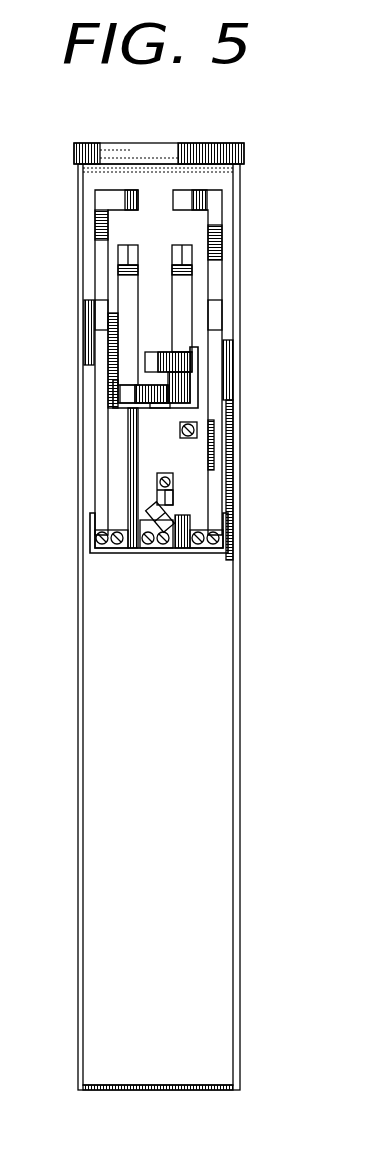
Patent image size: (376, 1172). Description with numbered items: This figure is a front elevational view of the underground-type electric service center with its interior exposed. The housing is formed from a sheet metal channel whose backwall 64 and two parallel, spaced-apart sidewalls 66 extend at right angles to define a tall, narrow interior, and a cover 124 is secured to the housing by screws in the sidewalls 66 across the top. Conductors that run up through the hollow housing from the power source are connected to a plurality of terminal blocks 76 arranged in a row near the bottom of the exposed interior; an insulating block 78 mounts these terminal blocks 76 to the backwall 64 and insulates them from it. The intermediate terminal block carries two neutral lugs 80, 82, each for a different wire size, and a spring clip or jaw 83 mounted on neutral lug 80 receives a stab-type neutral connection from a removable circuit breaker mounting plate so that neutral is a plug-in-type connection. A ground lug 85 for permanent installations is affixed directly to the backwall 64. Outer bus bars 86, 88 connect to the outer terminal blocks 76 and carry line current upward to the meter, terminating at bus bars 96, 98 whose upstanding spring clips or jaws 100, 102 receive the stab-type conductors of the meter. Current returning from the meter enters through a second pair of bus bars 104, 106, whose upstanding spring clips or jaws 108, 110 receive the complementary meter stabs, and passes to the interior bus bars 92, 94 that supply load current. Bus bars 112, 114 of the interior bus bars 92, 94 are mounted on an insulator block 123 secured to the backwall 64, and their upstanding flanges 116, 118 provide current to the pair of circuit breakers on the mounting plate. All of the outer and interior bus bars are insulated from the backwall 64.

The backwall 64 is at (100, 1076).
The sidewalls 66 is at (78, 870).
The terminal blocks 76 is at (200, 550).
The insulating block 78 is at (205, 502).
The neutral lug 80 is at (157, 480).
The neutral lug 82 is at (150, 515).
The spring clip or jaw 83 is at (185, 485).
The ground lug 85 is at (197, 432).
The outer bus bar 86 is at (100, 415).
The outer bus bar 88 is at (215, 422).
The interior bus bar 92 is at (110, 315).
The interior bus bar 94 is at (195, 312).
The bus bar 96 is at (95, 190).
The bus bar 98 is at (188, 190).
The spring clip or jaw 100 is at (97, 228).
The spring clip or jaw 102 is at (182, 222).
The bus bar 104 is at (120, 250).
The bus bar 106 is at (195, 262).
The spring clip or jaw 108 is at (110, 288).
The spring clip or jaw 110 is at (163, 282).
The bus bar 112 is at (196, 390).
The bus bar 114 is at (188, 360).
The upstanding flange 116 is at (120, 395).
The upstanding flange 118 is at (108, 350).
The insulator block 123 is at (160, 410).
The cover 124 is at (173, 144).